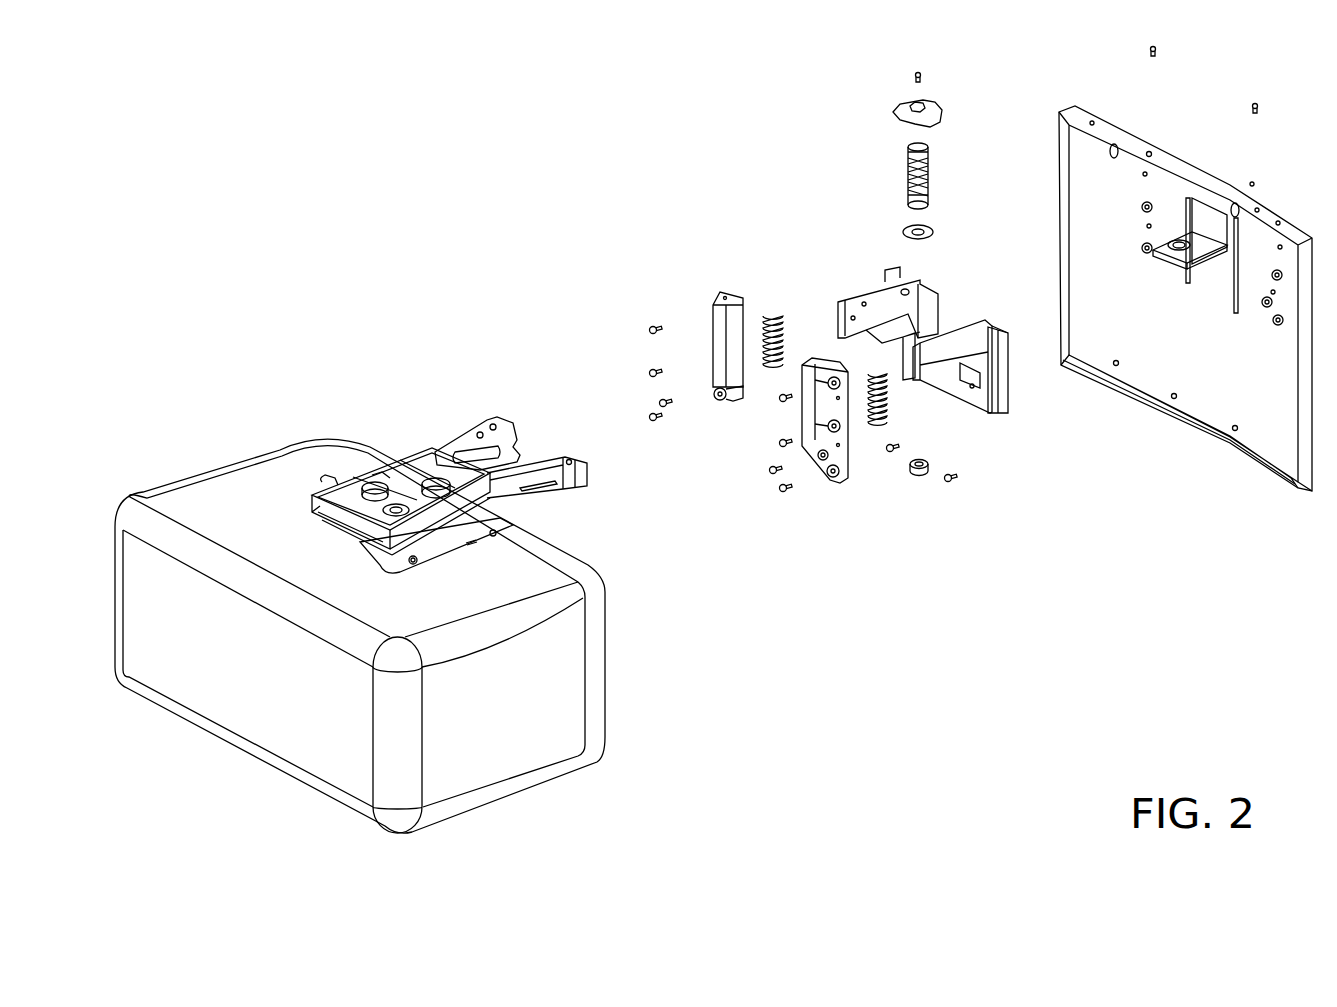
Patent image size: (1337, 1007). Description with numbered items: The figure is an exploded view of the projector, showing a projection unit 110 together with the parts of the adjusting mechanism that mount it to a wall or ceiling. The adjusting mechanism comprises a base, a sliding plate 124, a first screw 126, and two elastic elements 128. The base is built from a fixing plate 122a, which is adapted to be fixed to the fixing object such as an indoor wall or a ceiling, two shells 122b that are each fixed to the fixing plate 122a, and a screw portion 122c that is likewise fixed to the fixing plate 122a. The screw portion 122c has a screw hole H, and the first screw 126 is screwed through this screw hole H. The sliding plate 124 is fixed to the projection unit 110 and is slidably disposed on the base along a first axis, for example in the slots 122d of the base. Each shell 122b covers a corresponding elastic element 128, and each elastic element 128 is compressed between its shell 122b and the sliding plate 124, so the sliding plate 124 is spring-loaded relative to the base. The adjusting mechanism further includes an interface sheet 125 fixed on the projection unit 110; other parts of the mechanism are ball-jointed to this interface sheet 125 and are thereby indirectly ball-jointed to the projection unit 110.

The projection unit 110 is at (245, 493).
The sliding plate 124 is at (882, 305).
The interface sheet 125 is at (451, 548).
The first screw 126 is at (906, 160).
The elastic elements 128 is at (781, 339).
The fixing plate 122a is at (1115, 135).
The shells 122b is at (720, 367).
The screw portion 122c is at (1230, 179).
The slots 122d is at (1231, 283).
The screw hole H is at (1178, 238).